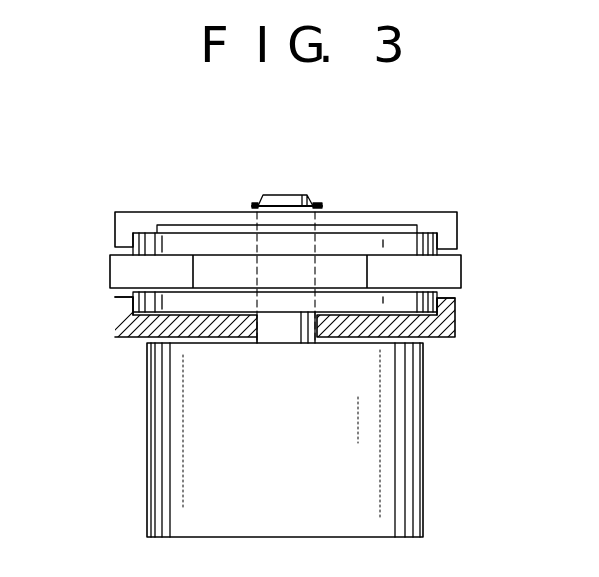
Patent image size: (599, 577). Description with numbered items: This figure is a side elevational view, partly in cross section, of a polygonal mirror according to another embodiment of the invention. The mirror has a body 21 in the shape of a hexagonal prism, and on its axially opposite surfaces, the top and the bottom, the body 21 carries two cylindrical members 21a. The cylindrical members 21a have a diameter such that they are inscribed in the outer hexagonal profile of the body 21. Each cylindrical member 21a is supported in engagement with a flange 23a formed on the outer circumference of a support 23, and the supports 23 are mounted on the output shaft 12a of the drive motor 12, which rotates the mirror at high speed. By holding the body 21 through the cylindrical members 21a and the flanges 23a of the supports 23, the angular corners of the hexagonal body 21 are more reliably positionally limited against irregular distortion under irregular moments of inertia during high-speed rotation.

The drive motor 12 is at (402, 472).
The output shaft 12a is at (277, 204).
The body 21 is at (453, 272).
The cylindrical members 21a is at (353, 243).
The supports 23 is at (437, 218).
The flanges 23a is at (117, 303).